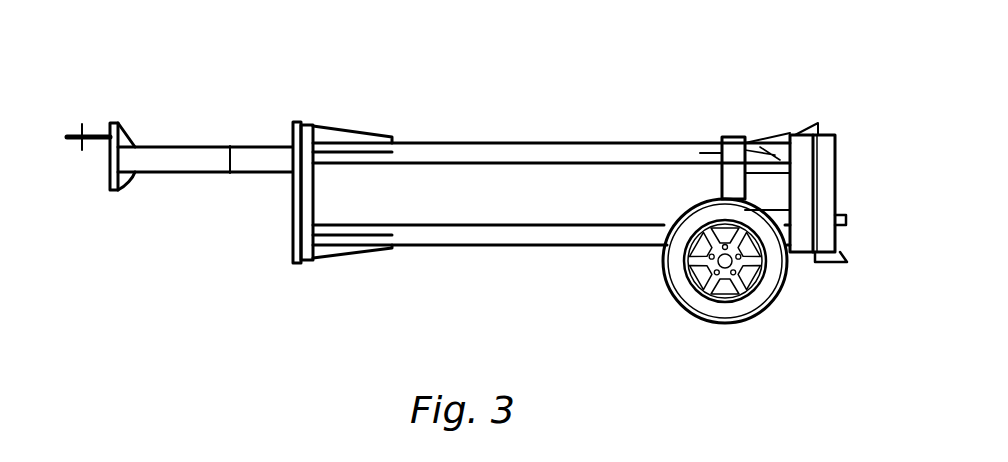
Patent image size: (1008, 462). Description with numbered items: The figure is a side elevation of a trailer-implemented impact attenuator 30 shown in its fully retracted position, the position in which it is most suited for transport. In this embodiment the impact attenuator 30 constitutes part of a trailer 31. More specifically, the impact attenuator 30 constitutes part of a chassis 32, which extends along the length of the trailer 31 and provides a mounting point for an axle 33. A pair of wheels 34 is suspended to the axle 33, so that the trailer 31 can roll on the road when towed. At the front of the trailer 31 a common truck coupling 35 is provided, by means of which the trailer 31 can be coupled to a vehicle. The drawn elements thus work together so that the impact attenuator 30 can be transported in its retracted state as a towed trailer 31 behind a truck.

The impact attenuator 30 is at (773, 69).
The trailer 31 is at (835, 325).
The chassis 32 is at (502, 193).
The axle 33 is at (718, 261).
The wheels 34 is at (682, 290).
The truck coupling 35 is at (93, 133).